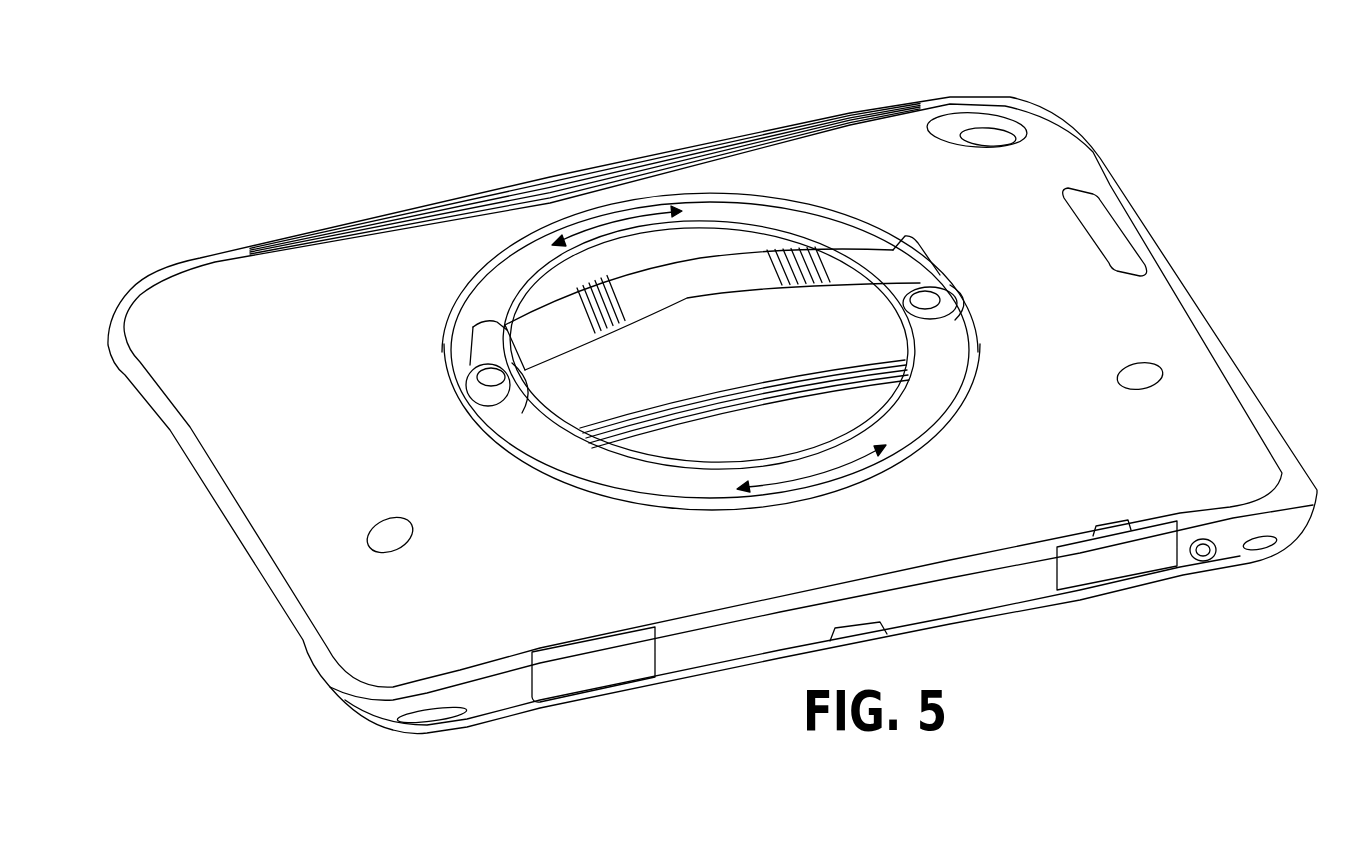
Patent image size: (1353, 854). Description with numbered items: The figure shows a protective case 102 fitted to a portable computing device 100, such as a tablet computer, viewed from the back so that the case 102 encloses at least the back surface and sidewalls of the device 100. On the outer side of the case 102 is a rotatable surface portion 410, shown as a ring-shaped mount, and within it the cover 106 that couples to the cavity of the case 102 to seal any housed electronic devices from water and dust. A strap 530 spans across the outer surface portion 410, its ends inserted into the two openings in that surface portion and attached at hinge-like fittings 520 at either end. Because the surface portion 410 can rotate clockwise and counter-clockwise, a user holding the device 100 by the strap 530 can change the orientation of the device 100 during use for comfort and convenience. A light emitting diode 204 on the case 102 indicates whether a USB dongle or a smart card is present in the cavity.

The computing device 100 is at (712, 408).
The case 102 is at (1101, 149).
The cover 106 is at (683, 467).
The light emitting diode (LED) 204 is at (1005, 490).
The surface portion 410 is at (943, 383).
The hinge 520 is at (957, 280).
The strap 530 is at (708, 298).